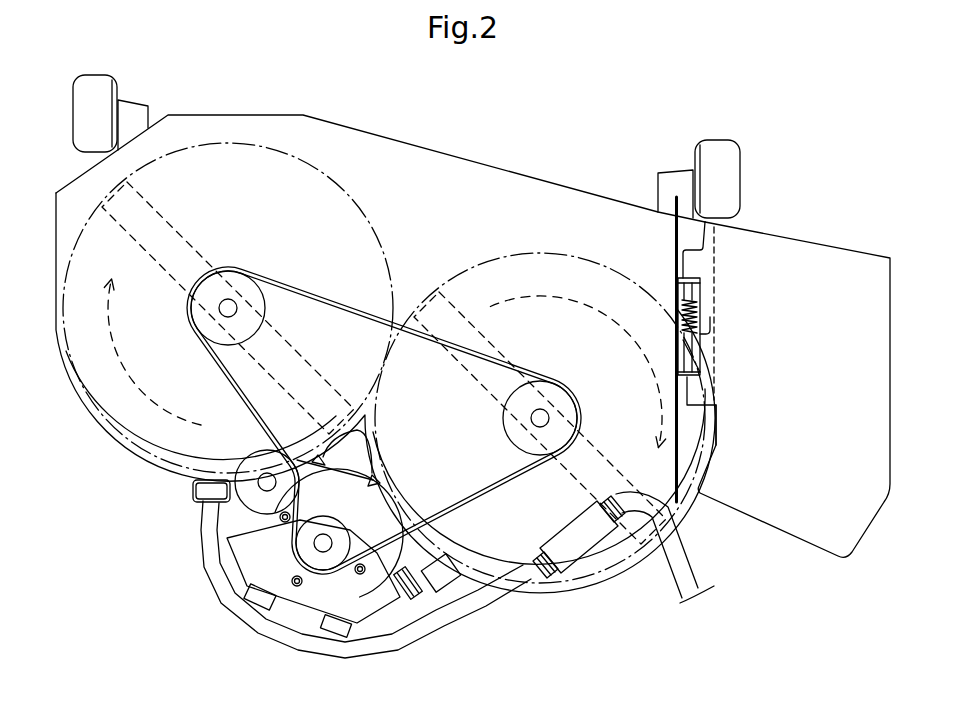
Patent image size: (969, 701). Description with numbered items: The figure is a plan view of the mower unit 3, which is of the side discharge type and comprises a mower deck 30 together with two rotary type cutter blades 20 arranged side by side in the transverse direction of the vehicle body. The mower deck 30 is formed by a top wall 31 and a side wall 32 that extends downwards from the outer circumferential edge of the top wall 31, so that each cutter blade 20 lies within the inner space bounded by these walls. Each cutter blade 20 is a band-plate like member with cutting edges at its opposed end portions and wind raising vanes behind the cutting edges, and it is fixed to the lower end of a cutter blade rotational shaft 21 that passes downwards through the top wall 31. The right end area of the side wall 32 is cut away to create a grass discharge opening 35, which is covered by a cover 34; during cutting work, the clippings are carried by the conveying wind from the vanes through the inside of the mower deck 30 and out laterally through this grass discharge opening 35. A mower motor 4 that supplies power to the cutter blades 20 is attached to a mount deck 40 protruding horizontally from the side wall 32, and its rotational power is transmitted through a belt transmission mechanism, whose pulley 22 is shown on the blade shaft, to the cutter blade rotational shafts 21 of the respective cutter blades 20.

The mower unit 3 is at (398, 334).
The mower deck 30 is at (388, 177).
The top wall 31 is at (447, 195).
The side wall 32 is at (580, 190).
The cover 34 is at (798, 263).
The grass discharge opening 35 is at (718, 352).
The cutter blade 20 is at (157, 195).
The cutter blade rotational shaft 21 is at (237, 310).
The pulley 22 is at (576, 407).
The mower motor 4 is at (370, 517).
The mount deck 40 is at (223, 578).